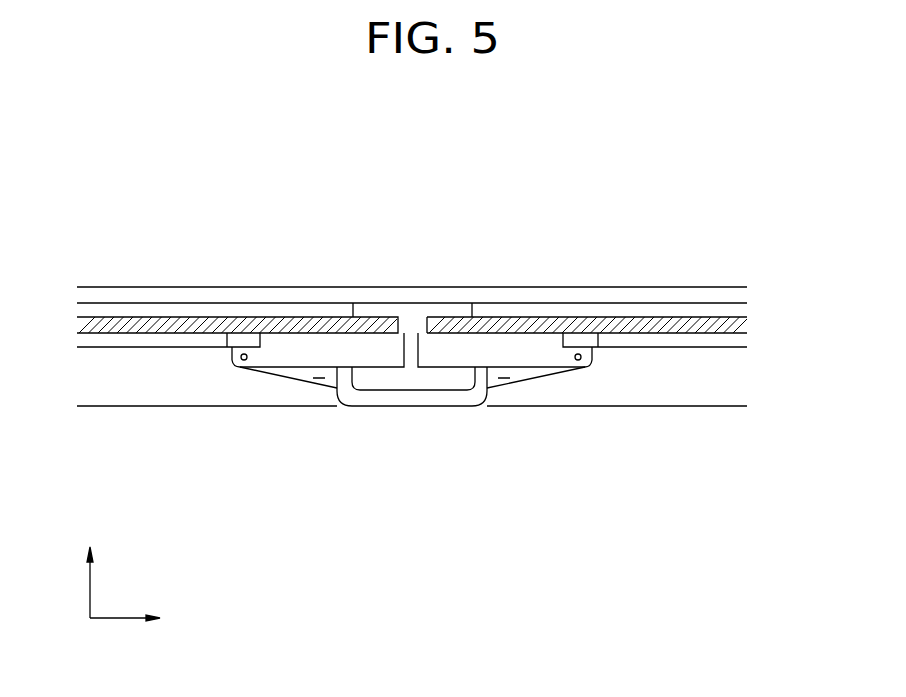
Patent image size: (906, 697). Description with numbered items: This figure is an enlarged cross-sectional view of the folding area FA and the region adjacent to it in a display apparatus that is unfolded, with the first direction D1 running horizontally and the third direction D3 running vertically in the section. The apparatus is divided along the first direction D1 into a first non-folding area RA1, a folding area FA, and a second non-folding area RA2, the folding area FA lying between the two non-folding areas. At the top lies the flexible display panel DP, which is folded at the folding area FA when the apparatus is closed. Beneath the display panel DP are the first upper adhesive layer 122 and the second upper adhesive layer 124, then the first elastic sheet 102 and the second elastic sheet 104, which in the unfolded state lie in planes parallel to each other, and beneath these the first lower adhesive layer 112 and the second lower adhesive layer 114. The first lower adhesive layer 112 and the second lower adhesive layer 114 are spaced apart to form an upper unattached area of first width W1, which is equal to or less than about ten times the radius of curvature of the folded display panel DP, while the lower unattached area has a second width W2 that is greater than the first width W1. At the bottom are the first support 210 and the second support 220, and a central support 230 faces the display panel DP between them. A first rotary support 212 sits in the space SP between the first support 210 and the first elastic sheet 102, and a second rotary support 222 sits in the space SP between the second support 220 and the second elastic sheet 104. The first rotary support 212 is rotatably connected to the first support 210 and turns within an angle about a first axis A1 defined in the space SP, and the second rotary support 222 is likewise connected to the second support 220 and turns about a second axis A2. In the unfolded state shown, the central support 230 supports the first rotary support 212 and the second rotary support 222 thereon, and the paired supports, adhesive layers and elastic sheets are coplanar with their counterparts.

The display panel DP is at (742, 292).
The first elastic sheet 102 is at (82, 322).
The second elastic sheet 104 is at (742, 323).
The first lower adhesive layer 112 is at (172, 338).
The second lower adhesive layer 114 is at (673, 338).
The first upper adhesive layer 122 is at (119, 308).
The second upper adhesive layer 124 is at (618, 308).
The first support 210 is at (148, 392).
The first rotary support 212 is at (287, 358).
The second rotary support 222 is at (532, 358).
The second support 220 is at (740, 378).
The central support 230 is at (412, 397).
The first axis A1 is at (243, 366).
The second axis A2 is at (578, 368).
The space SP is at (490, 448).
The first width W1 is at (470, 213).
The second width W2 is at (597, 504).
The folding area FA is at (595, 167).
The first non-folding area RA1 is at (225, 167).
The second non-folding area RA2 is at (747, 162).
The first direction D1 is at (139, 619).
The third direction D3 is at (89, 568).